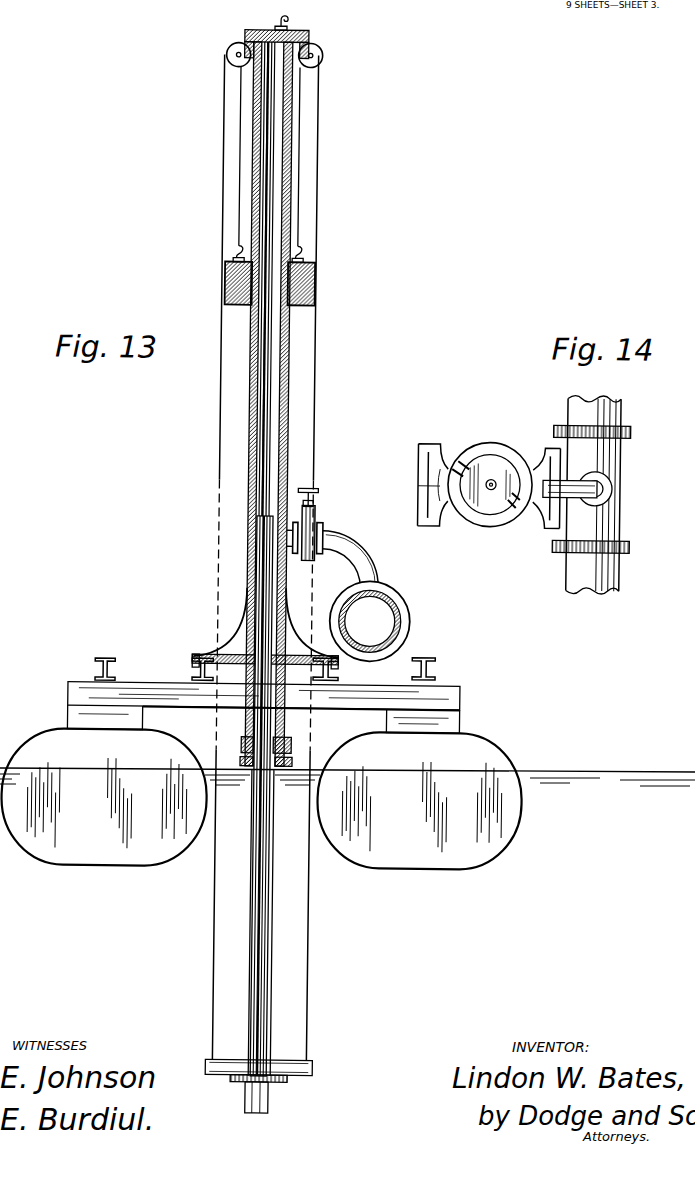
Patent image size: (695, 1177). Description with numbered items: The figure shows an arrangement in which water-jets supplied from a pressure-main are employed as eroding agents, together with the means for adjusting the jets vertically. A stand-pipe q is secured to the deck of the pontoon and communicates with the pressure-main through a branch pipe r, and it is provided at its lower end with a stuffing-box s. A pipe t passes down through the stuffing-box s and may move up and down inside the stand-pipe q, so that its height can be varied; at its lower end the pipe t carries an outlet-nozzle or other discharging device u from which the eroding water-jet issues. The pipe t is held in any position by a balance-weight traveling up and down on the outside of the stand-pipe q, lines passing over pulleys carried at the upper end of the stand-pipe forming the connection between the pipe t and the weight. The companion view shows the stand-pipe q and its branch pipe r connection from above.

In FIG. 13, the tube q is at (268, 404).
In FIG. 14, the tube q is at (490, 484).
In FIG. 13, the weights and pipe / valve connection r is at (301, 308).
In FIG. 14, the weights and pipe / valve connection r is at (612, 483).
In FIG. 13, the collar s is at (271, 754).
In FIG. 13, the lower cylinder t is at (260, 912).
In FIG. 13, the tip u is at (258, 1106).